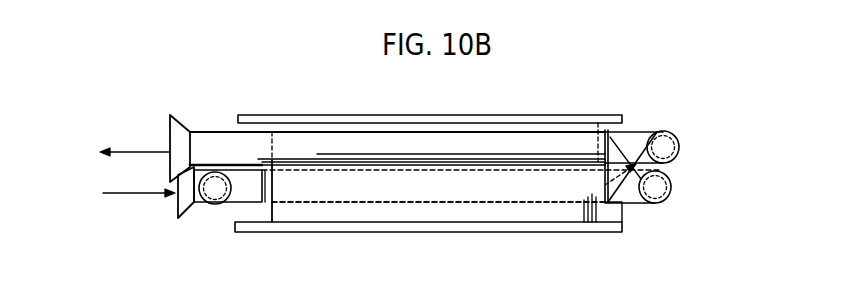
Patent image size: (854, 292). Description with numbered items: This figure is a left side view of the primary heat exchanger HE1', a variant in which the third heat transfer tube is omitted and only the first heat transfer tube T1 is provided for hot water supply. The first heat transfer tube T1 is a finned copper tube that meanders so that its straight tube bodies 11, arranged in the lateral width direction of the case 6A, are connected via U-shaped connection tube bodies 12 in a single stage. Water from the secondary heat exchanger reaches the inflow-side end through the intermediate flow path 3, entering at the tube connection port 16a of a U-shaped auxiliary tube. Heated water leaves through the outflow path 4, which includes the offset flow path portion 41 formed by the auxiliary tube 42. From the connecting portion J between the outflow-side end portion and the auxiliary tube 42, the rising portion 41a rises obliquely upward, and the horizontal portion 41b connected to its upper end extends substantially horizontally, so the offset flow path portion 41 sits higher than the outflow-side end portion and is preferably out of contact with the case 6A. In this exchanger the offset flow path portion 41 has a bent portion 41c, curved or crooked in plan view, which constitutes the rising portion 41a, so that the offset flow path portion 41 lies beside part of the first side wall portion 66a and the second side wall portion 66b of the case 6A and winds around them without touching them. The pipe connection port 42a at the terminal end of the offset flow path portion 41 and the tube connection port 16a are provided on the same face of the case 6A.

The primary heat exchanger HE1' is at (362, 129).
The outflow path 4 is at (143, 150).
The intermediate flow path 3 is at (128, 195).
The pipe connection port 42a is at (167, 140).
The tube connection port 16a is at (175, 208).
The connection tube body 12 is at (237, 198).
The case 6A is at (566, 112).
The second side wall portion 66b is at (408, 212).
The auxiliary tube 42 is at (510, 132).
The horizontal portion 41b is at (405, 138).
The offset flow path portion 41 is at (461, 152).
The first heat transfer tube T1 is at (341, 208).
The straight tube body 11 is at (530, 193).
The connecting portion J is at (618, 209).
The first side wall portion 66a is at (615, 227).
The bent portion 41c is at (681, 128).
The rising portion 41a is at (671, 181).